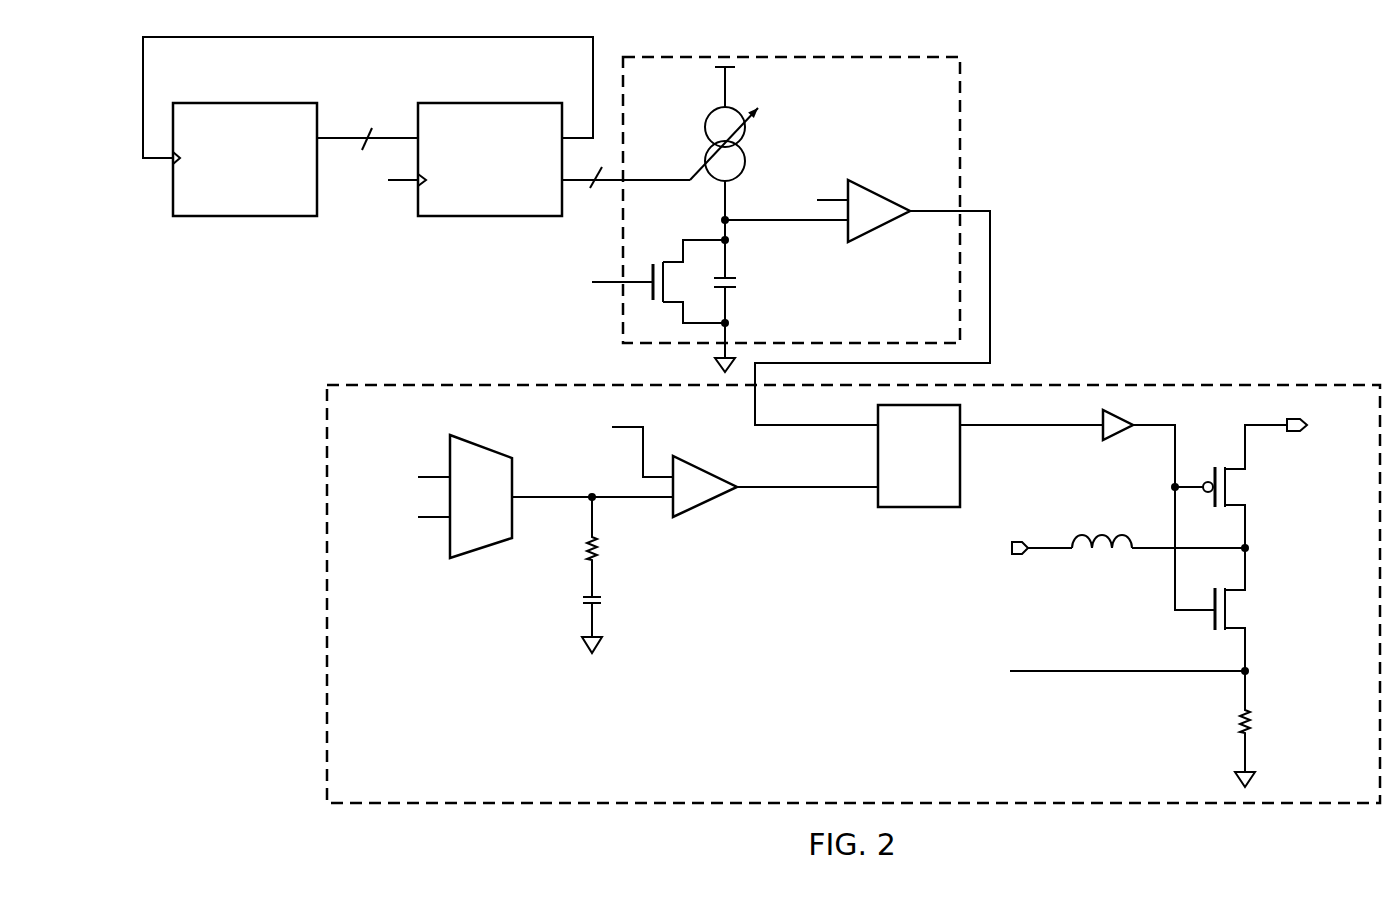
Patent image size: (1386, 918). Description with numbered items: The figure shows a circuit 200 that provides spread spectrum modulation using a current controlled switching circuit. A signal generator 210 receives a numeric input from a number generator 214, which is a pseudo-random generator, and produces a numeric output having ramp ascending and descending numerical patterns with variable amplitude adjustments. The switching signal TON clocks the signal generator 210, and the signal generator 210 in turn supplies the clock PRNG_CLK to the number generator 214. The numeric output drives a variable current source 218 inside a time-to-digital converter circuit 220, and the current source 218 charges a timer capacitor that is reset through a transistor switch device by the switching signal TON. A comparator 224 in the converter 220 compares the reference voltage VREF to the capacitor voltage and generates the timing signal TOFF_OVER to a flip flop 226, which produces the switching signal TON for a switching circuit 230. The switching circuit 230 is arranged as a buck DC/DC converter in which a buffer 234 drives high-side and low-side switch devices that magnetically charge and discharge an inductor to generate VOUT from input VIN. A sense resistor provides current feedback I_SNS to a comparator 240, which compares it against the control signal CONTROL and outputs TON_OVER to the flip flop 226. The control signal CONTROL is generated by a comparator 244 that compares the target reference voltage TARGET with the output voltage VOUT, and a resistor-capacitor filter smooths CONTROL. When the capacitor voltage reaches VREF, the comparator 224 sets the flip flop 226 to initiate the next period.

The circuit 200 is at (1207, 158).
The signal generator 210 is at (490, 103).
The number generator 214 is at (245, 103).
The variable current source 218 is at (705, 132).
The time-to-digital converter circuit 220 is at (962, 138).
The comparator 224 is at (878, 193).
The flip flop 226 is at (918, 507).
The switching circuit 230 is at (322, 655).
The buffer 234 is at (1122, 433).
The comparator 240 is at (707, 505).
The comparator 244 is at (478, 552).